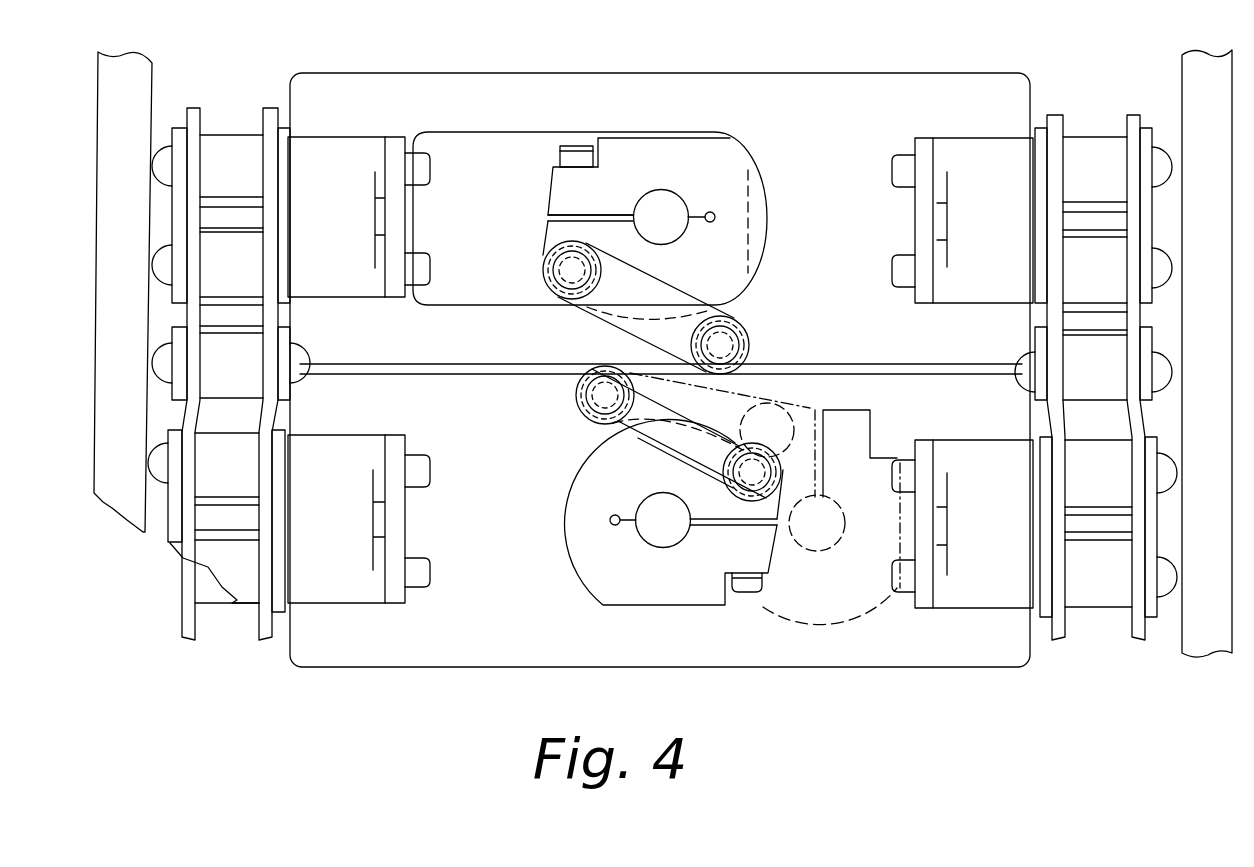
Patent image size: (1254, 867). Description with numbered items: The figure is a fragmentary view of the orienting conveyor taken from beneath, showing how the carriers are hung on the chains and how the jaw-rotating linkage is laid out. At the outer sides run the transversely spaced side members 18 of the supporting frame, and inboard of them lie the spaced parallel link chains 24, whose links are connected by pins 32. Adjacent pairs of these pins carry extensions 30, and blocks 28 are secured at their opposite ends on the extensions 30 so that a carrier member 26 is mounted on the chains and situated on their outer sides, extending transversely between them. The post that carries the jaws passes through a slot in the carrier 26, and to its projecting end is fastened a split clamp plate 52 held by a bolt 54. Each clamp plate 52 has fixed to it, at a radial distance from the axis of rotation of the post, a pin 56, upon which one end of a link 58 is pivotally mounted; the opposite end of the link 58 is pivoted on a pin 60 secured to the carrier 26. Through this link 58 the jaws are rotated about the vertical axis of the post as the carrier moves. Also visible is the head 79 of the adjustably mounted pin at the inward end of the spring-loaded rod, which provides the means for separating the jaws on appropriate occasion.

The side member 18 is at (153, 85).
The link chain 24 is at (224, 128).
The carrier member 26 is at (405, 662).
The block 28 is at (340, 436).
The extension 30 is at (408, 580).
The pin 32 is at (161, 453).
The split clamp plate 52 is at (586, 575).
The bolt 54 is at (746, 595).
The pin 56 is at (739, 493).
The link 58 is at (640, 440).
The pin 60 is at (577, 404).
The head 79 is at (673, 196).